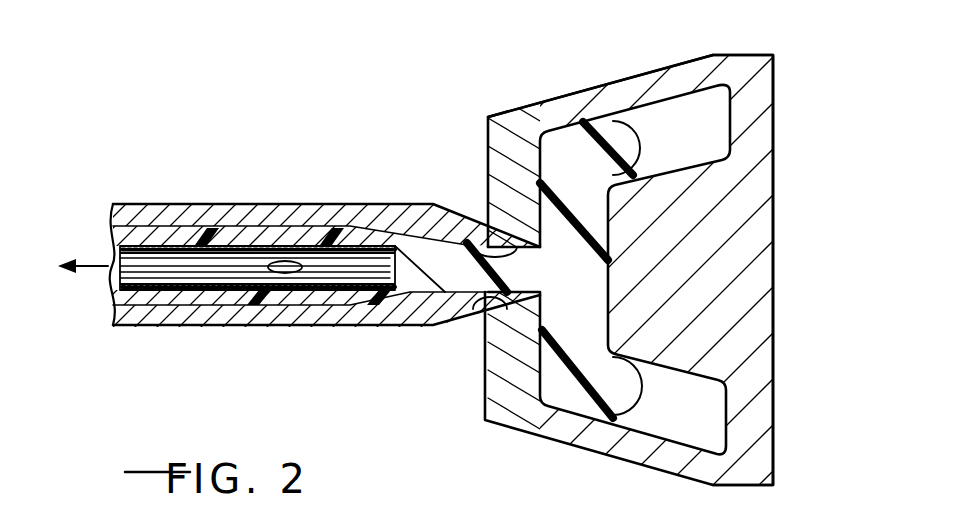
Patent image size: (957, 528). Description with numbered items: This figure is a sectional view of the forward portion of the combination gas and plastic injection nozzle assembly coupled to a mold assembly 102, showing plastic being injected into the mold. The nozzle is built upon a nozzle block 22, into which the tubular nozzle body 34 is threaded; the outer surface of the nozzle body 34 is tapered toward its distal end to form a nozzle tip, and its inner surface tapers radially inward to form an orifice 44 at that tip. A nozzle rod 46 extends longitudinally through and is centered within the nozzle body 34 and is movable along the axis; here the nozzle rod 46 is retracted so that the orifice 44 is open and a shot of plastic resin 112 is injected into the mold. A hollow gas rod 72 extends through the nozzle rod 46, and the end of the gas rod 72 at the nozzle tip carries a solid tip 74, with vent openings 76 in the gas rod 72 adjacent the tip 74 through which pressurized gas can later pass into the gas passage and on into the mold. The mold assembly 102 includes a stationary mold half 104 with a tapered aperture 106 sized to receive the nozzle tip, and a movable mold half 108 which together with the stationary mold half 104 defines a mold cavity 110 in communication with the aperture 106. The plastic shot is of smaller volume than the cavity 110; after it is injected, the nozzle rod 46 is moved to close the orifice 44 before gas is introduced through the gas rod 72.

The nozzle block 22 is at (203, 158).
The nozzle body 34 is at (358, 203).
The orifice 44 is at (473, 242).
The nozzle rod 46 is at (161, 243).
The gas rod 72 is at (143, 268).
The solid tip 74 is at (337, 290).
The vent openings 76 is at (250, 287).
The mold assembly 102 is at (652, 65).
The stationary mold half 104 is at (557, 100).
The tapered aperture 106 is at (474, 312).
The movable mold half 108 is at (745, 55).
The mold cavity 110 is at (702, 120).
The plastic resin 112 is at (444, 279).